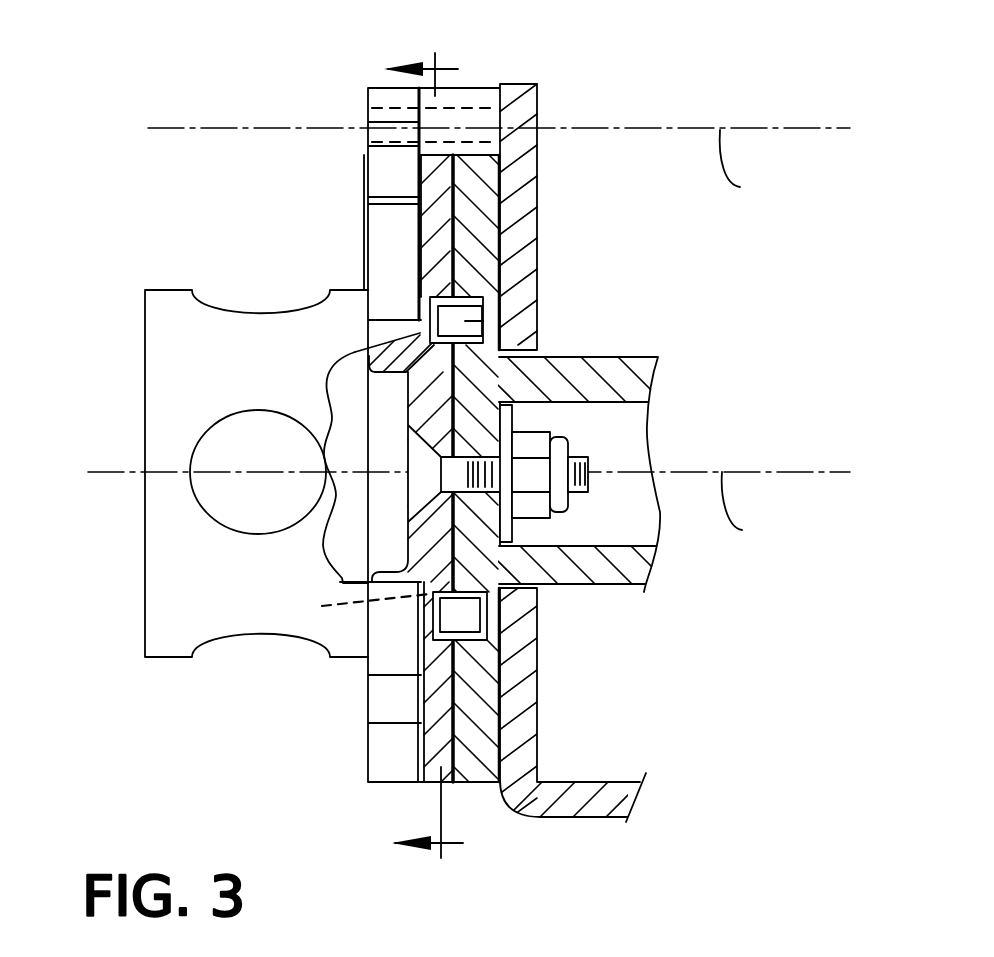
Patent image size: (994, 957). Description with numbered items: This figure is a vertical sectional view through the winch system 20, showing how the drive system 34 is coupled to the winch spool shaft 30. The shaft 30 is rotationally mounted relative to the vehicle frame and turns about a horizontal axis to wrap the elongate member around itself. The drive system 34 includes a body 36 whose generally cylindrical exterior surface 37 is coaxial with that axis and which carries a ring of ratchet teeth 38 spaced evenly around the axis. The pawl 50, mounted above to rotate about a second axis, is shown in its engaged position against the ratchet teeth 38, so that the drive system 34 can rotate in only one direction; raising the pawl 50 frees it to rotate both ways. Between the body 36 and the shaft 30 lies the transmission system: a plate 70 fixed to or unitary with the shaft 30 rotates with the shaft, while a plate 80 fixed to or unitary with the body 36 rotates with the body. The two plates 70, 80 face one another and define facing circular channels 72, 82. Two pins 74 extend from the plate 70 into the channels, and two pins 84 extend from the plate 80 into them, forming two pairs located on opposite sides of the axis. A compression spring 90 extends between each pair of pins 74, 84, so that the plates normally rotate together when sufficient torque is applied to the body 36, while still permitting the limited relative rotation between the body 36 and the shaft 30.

The winch system 20 is at (435, 457).
The winch spool shaft 30 is at (600, 356).
The drive system 34 is at (130, 572).
The body 36 is at (146, 385).
The cylindrical exterior surface 37 is at (270, 378).
The ratchet teeth 38 is at (381, 230).
The pawl 50 is at (368, 100).
The plate 70 is at (480, 787).
The circular channel 72 is at (495, 295).
The pins 74 is at (467, 322).
The plate 80 is at (433, 783).
The circular channel 82 is at (432, 297).
The pins 84 is at (468, 617).
The compression spring 90 is at (351, 607).